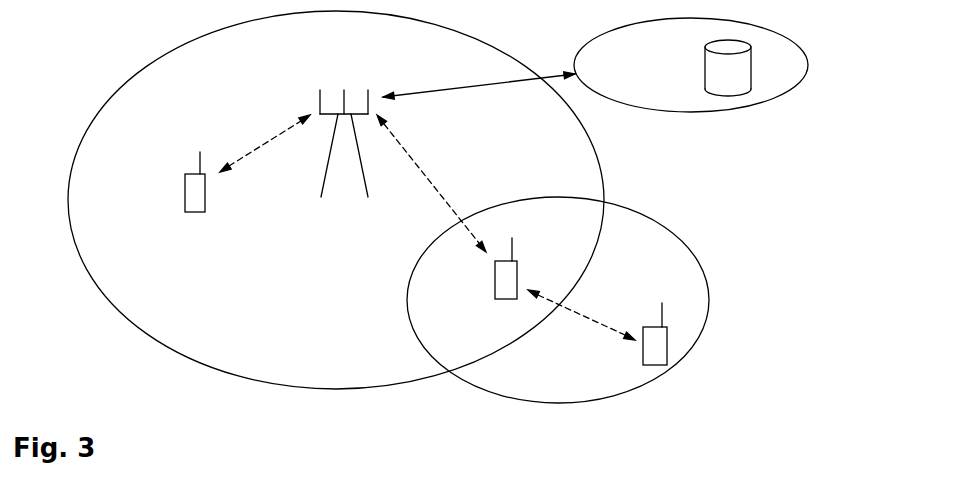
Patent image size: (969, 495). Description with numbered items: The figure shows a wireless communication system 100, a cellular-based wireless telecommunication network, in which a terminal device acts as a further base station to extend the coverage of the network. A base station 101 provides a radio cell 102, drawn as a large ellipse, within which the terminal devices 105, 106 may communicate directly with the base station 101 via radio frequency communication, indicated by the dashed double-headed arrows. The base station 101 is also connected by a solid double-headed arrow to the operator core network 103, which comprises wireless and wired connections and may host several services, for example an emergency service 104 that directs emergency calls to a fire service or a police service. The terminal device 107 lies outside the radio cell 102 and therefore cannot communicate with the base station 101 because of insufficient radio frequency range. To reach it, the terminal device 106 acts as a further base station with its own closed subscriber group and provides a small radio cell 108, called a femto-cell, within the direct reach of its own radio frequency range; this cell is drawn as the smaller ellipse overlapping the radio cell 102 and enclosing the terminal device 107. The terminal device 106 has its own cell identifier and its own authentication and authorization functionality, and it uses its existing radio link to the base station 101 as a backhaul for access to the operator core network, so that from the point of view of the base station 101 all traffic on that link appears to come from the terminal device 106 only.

The wireless communication system 100 is at (90, 55).
The base station 101 is at (317, 92).
The radio cell 102 is at (143, 337).
The operator core network 103 is at (638, 107).
The emergency service 104 is at (740, 88).
The terminal device 105 is at (203, 213).
The terminal device 106 is at (495, 293).
The terminal device 107 is at (667, 345).
The radio cell 108 is at (706, 287).